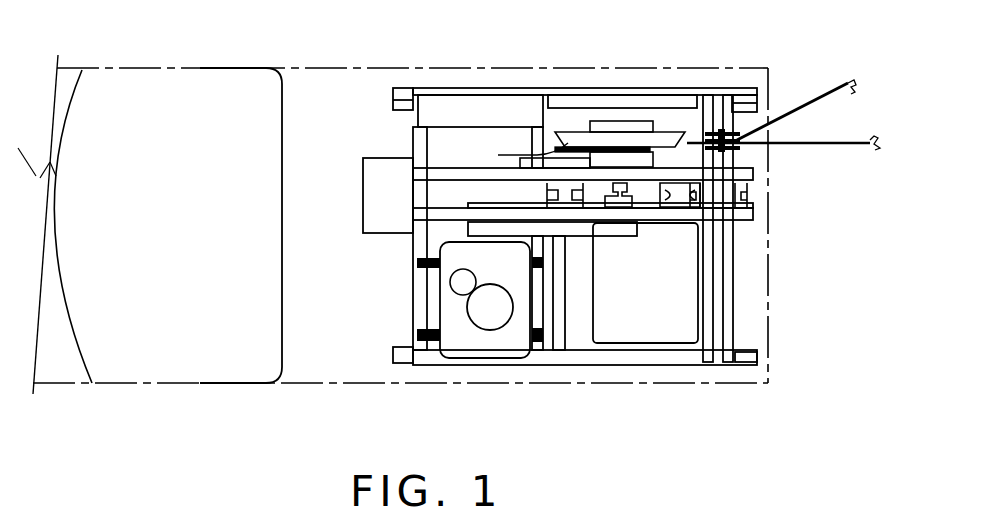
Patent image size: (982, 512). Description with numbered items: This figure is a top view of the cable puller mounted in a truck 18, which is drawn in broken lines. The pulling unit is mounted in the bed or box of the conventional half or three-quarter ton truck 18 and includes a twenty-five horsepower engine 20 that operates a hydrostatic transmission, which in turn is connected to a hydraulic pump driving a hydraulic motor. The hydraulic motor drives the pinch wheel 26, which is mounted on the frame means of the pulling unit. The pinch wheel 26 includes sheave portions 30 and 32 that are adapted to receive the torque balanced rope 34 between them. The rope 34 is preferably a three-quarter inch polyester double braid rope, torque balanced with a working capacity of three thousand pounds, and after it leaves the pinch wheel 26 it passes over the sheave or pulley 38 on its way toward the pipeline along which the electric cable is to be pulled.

The truck 18 is at (247, 335).
The engine 20 is at (480, 327).
The pinch wheel 26 is at (657, 132).
The sheave portion 30 is at (566, 130).
The sheave portion 32 is at (518, 153).
The torque balanced rope 34 is at (830, 145).
The sheave or pulley 38 is at (742, 133).